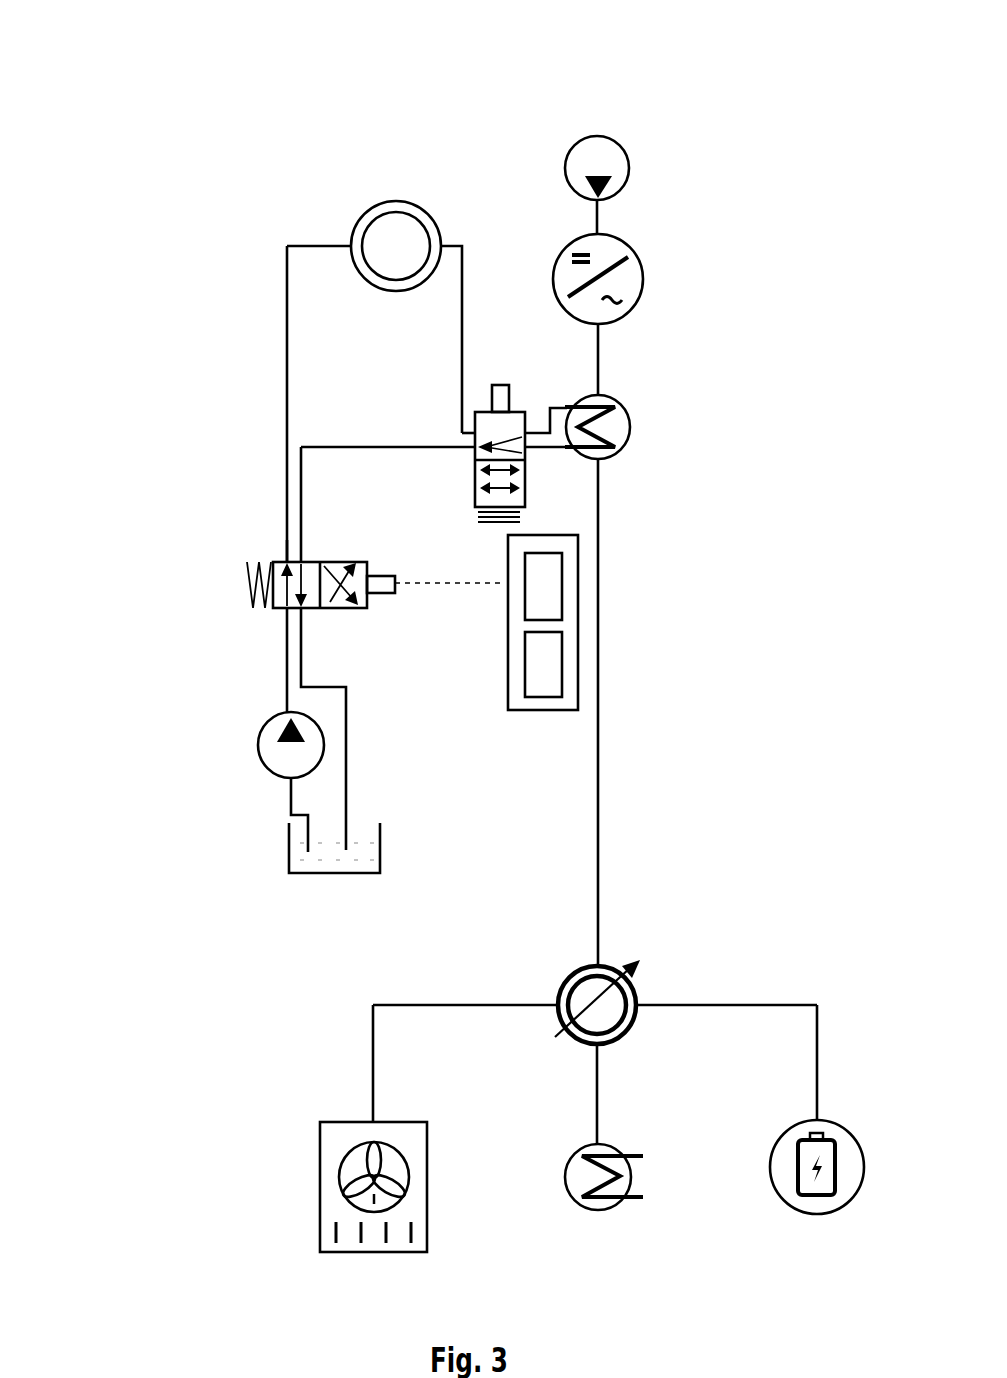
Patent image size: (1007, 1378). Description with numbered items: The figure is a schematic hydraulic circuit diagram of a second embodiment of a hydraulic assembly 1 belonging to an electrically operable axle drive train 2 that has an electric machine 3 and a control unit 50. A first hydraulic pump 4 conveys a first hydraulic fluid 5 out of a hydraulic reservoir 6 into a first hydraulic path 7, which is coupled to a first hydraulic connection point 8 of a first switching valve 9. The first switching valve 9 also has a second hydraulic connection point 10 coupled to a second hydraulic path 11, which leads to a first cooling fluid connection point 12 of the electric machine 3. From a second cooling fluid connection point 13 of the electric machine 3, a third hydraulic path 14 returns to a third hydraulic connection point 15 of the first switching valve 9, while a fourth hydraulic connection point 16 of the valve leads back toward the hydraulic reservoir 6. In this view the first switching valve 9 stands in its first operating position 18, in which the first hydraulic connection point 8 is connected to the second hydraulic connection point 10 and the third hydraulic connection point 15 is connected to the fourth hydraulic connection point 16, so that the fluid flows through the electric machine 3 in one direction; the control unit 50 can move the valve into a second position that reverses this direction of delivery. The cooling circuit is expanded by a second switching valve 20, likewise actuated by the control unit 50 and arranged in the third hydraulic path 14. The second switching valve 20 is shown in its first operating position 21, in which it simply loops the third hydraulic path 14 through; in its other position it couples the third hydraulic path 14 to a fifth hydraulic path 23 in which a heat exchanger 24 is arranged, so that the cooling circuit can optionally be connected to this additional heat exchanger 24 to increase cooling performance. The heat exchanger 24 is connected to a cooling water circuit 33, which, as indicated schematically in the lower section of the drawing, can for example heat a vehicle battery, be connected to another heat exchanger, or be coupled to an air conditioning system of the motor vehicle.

The hydraulic assembly 1 is at (240, 170).
The electrically operable axle drive train 2 is at (96, 86).
The electric machine 3 is at (397, 200).
The first hydraulic pump 4 is at (259, 746).
The first hydraulic fluid 5 is at (325, 852).
The hydraulic reservoir 6 is at (382, 856).
The first hydraulic path 7 is at (286, 697).
The first hydraulic connection point 8 is at (285, 611).
The first switching valve 9 is at (234, 581).
The second hydraulic connection point 10 is at (284, 556).
The second hydraulic path 11 is at (287, 350).
The first cooling fluid connection point 12 is at (340, 245).
The second cooling fluid connection point 13 is at (462, 245).
The third hydraulic path 14 is at (462, 340).
The third hydraulic connection point 15 is at (301, 552).
The fourth hydraulic connection point 16 is at (299, 612).
The first operating position 18 is at (272, 530).
The second switching valve 20 is at (500, 380).
The first operating position 21 is at (548, 387).
The fifth hydraulic path 23 is at (552, 449).
The heat exchanger 24 is at (631, 427).
The cooling water circuit 33 is at (598, 850).
The control unit 50 is at (578, 655).